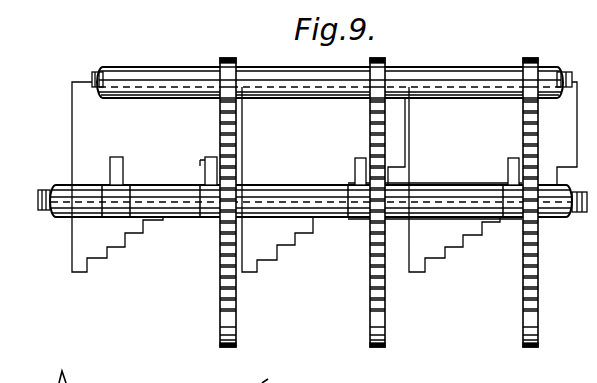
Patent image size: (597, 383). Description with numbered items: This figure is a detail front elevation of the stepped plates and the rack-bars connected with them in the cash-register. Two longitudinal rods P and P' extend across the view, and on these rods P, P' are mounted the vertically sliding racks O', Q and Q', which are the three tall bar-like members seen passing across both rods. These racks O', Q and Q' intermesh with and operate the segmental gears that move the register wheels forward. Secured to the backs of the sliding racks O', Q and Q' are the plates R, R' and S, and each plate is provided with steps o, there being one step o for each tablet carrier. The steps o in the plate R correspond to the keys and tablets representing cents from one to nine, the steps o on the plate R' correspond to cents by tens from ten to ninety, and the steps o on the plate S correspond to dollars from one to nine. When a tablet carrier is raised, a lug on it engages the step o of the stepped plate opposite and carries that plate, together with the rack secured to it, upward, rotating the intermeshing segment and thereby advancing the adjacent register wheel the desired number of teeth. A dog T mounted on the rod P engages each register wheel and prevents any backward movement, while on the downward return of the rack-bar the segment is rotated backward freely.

The rod P is at (332, 65).
The rod P' is at (311, 185).
The sliding rack Q is at (361, 202).
The sliding rack Q' is at (246, 202).
The sliding rack O' is at (513, 202).
The dog T is at (117, 156).
The stepped plate S is at (151, 179).
The stepped plate R' is at (337, 183).
The stepped plate R is at (453, 182).
The step o is at (141, 232).